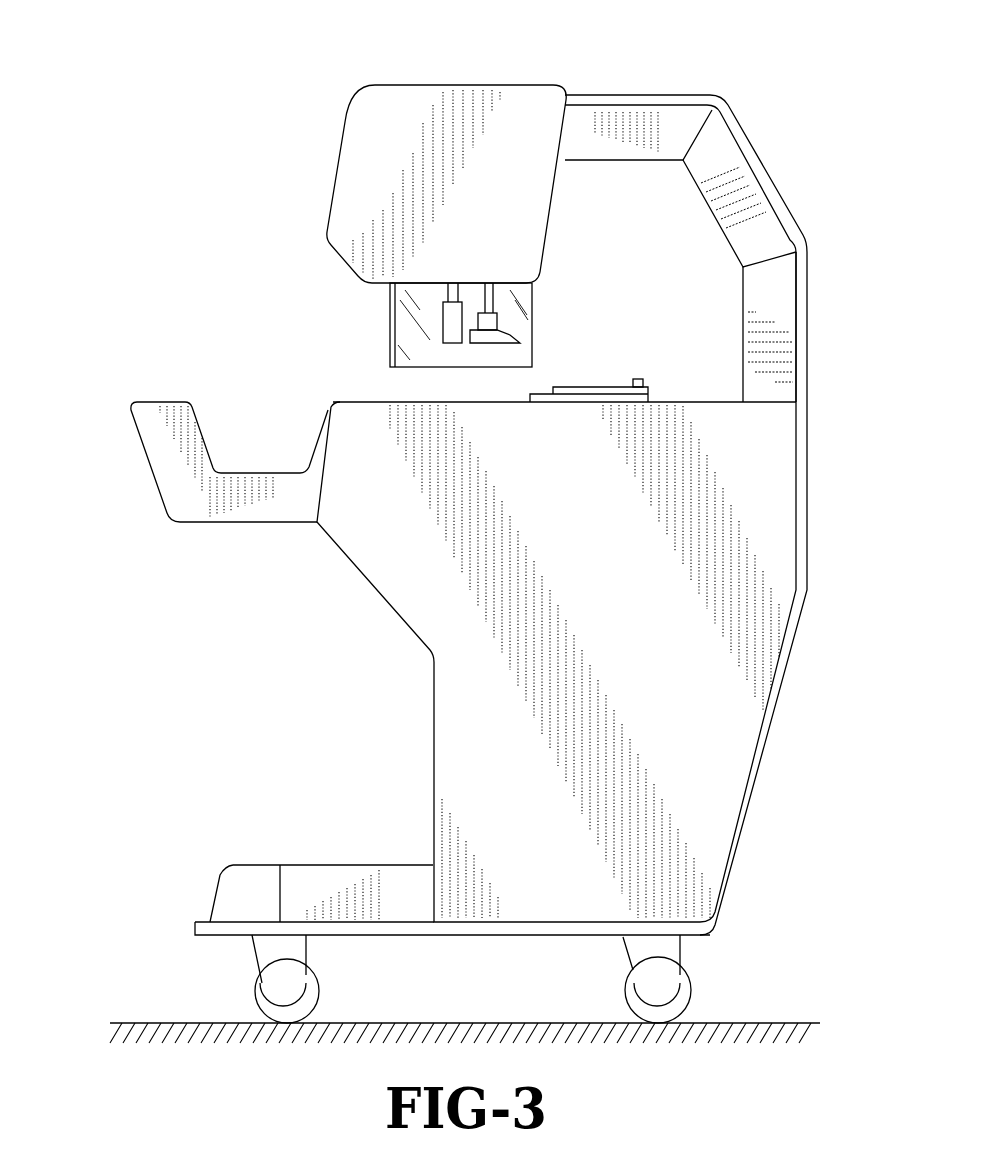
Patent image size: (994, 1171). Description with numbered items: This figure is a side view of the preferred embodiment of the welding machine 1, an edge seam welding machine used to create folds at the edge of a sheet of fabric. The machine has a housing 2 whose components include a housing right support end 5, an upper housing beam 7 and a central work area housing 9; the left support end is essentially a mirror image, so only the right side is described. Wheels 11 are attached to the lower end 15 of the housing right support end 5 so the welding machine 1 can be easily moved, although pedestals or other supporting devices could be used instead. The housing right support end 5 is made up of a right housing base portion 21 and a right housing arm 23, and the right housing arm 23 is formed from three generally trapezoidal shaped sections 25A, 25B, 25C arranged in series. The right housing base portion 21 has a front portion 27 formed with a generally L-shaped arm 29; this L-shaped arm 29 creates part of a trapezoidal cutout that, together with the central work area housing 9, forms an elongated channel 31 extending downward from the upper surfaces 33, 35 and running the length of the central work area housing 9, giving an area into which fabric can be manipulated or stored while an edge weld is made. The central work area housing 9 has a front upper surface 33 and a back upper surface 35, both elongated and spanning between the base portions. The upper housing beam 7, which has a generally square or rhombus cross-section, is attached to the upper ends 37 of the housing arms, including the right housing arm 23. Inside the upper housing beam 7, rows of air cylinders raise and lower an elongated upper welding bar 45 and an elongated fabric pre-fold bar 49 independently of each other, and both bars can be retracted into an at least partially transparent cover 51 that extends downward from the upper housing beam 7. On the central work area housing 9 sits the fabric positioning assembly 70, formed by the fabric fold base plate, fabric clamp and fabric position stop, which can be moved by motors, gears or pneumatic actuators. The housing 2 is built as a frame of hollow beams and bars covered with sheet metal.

The welding machine 1 is at (355, 58).
The housing 2 is at (400, 618).
The housing right support end 5 is at (487, 698).
The upper housing beam 7 is at (345, 153).
The central work area housing 9 is at (155, 470).
The wheels 11 is at (253, 980).
The lower end 15 is at (402, 936).
The right housing base portion 21 is at (710, 935).
The right housing arm 23 is at (713, 88).
The trapezoidal shaped section 25A is at (597, 150).
The trapezoidal shaped section 25B is at (736, 229).
The trapezoidal shaped section 25C is at (762, 299).
The front portion 27 is at (140, 447).
The L-shaped arm 29 is at (149, 461).
The elongated channel 31 is at (227, 457).
The front upper surface 33 is at (157, 400).
The back upper surface 35 is at (373, 400).
The upper ends 37 is at (619, 95).
The upper welding bar 45 is at (447, 322).
The fabric pre-fold bar 49 is at (488, 338).
The cover 51 is at (535, 303).
The fabric positioning assembly 70 is at (608, 380).